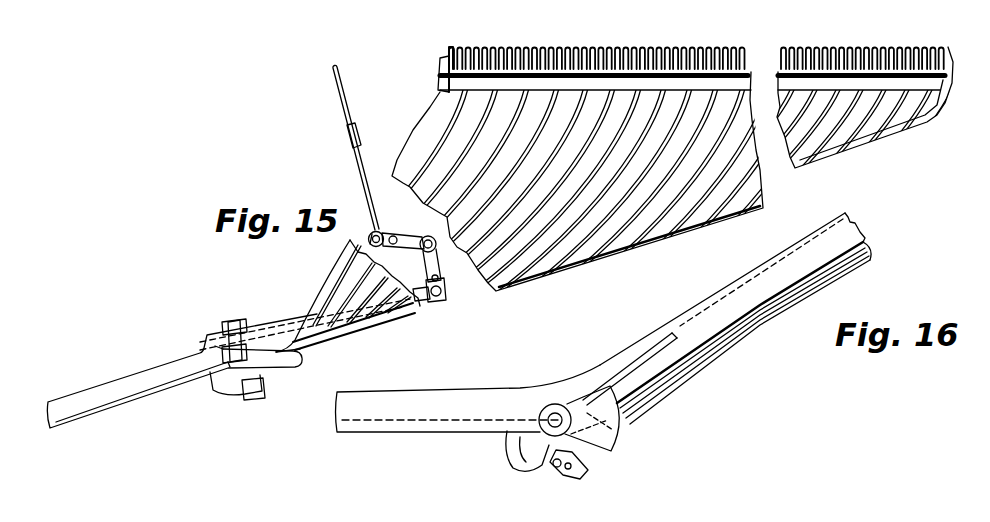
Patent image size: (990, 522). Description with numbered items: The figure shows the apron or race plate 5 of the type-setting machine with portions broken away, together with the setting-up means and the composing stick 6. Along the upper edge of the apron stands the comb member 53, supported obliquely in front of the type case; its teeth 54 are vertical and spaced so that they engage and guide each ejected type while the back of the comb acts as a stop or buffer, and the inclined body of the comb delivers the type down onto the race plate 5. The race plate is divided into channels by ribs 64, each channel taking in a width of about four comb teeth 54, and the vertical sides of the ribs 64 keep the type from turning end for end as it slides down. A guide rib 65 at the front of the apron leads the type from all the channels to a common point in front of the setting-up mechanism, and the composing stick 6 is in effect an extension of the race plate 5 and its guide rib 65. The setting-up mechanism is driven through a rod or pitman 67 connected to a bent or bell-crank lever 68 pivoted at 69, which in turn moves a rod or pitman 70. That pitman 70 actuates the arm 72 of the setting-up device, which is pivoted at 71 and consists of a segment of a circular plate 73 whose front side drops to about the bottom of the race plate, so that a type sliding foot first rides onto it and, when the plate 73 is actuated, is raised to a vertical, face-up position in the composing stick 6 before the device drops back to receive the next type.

In FIG. 15, the race plate or apron 5 is at (497, 120).
In FIG. 15, the composing stick 6 is at (138, 385).
In FIG. 16, the composing stick 6 is at (447, 418).
In FIG. 15, the comb member 53 is at (752, 72).
In FIG. 15, the teeth of the comb 54 is at (612, 50).
In FIG. 15, the ribs 64 is at (641, 207).
In FIG. 15, the guide rib 65 is at (567, 268).
In FIG. 16, the guide rib 65 is at (711, 300).
In FIG. 15, the rod or pitman 67 is at (356, 158).
In FIG. 15, the bell-crank lever 68 is at (409, 239).
In FIG. 15, the pivot 69 is at (441, 256).
In FIG. 15, the rod or pitman 70 is at (418, 300).
In FIG. 16, the rod or pitman 70 is at (766, 330).
In FIG. 15, the pivot 71 is at (253, 402).
In FIG. 16, the pivot 71 is at (557, 404).
In FIG. 16, the arm 72 is at (590, 447).
In FIG. 15, the segment of a circular plate 73 is at (278, 347).
In FIG. 16, the segment of a circular plate 73 is at (620, 432).